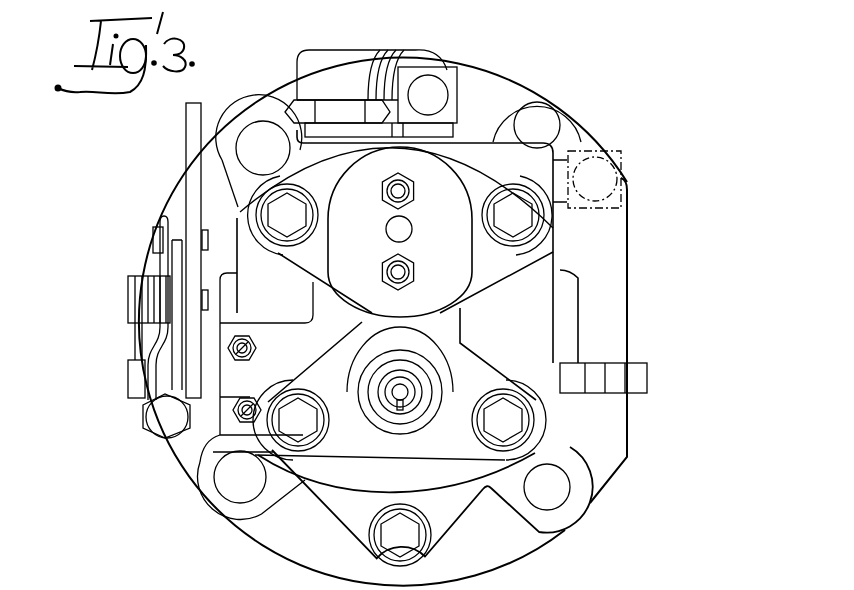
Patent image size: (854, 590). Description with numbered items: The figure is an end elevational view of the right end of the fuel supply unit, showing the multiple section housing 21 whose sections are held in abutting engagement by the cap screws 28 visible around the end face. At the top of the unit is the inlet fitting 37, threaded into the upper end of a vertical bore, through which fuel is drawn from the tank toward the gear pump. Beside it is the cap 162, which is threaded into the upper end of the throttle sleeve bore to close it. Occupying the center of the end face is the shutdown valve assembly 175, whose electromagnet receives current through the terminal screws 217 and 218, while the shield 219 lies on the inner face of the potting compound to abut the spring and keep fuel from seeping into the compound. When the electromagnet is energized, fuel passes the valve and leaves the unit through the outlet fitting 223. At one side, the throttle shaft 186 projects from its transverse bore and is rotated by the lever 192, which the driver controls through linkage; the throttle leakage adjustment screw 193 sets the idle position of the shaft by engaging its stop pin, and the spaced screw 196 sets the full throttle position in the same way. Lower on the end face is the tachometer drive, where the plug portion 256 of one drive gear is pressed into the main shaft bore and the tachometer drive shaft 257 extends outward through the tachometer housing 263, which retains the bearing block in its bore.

The multiple section housing 21 is at (633, 223).
The cap screws 28 is at (297, 225).
The inlet fitting 37 is at (343, 50).
The cap 162 is at (295, 108).
The shutdown valve assembly 175 is at (463, 226).
The throttle shaft 186 is at (648, 381).
The lever 192 is at (190, 123).
The throttle leakage adjustment screw 193 is at (268, 343).
The screw 196 is at (260, 392).
The terminal screw 217 is at (386, 189).
The terminal screw 218 is at (388, 270).
The shield 219 is at (487, 172).
The outlet fitting 223 is at (452, 116).
The plug portion 256 is at (480, 377).
The tachometer drive shaft 257 is at (413, 398).
The tachometer housing 263 is at (388, 418).